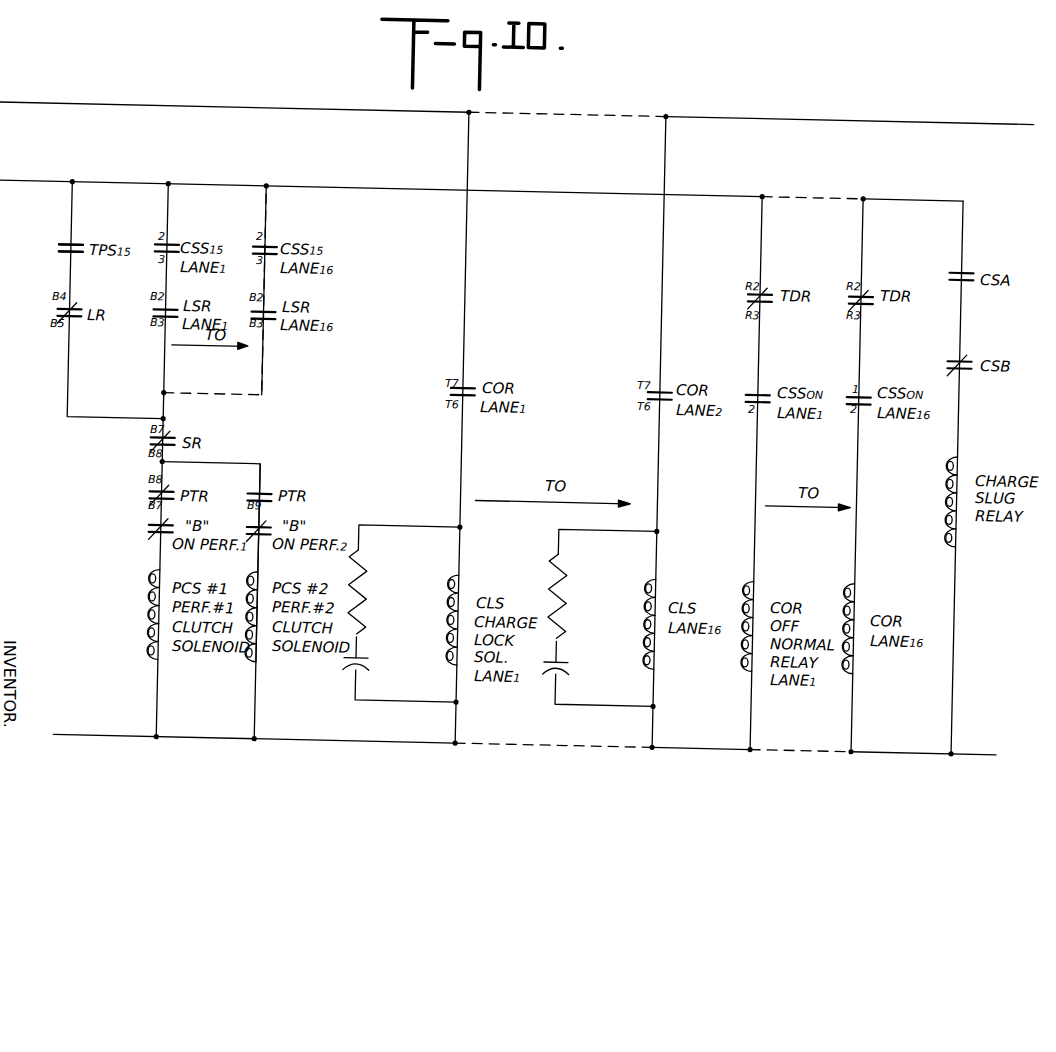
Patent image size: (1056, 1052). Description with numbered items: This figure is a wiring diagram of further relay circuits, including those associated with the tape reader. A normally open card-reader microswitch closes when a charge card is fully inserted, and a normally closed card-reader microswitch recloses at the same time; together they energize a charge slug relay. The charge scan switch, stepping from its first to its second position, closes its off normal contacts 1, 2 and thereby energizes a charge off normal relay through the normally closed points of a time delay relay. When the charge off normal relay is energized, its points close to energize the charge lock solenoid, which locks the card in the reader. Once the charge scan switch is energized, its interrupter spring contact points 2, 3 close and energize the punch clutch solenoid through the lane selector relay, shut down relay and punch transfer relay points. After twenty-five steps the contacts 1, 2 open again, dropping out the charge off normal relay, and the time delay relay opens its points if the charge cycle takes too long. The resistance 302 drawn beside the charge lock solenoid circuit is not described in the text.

The resistor RE 302 is at (401, 613).
The off normal contact 1 of the charge scan switch 1 is at (758, 393).
The contact point 2 of the charge scan switch 2 is at (71, 240).
The contact point 3 of the charge scan switch 3 is at (70, 255).